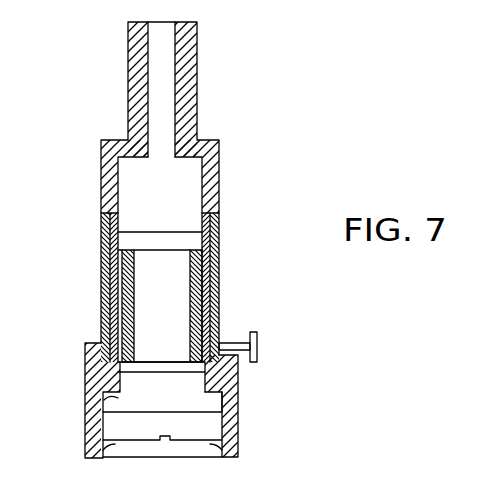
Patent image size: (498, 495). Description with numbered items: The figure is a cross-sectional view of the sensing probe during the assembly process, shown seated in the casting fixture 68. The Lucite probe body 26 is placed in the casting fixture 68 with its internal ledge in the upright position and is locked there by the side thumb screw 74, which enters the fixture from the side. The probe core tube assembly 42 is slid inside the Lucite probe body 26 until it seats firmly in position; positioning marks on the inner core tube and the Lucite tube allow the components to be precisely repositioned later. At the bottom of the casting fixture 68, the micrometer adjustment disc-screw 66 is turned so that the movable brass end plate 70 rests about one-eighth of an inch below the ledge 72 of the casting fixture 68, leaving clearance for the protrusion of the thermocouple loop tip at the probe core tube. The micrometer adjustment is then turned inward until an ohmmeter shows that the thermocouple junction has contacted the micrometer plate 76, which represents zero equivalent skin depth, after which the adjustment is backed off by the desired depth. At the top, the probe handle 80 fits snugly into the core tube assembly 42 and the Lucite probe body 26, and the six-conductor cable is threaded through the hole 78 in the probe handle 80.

The hole 78 is at (156, 56).
The probe handle 80 is at (205, 140).
The Lucite probe body 26 is at (101, 310).
The probe core tube assembly 42 is at (205, 273).
The side thumb screw 74 is at (257, 337).
The casting fixture 68 is at (238, 400).
The micrometer plate 76 is at (122, 395).
The micrometer adjustment disc-screw 66 is at (115, 428).
The movable brass end plate 70 is at (96, 458).
The ledge 72 is at (222, 447).